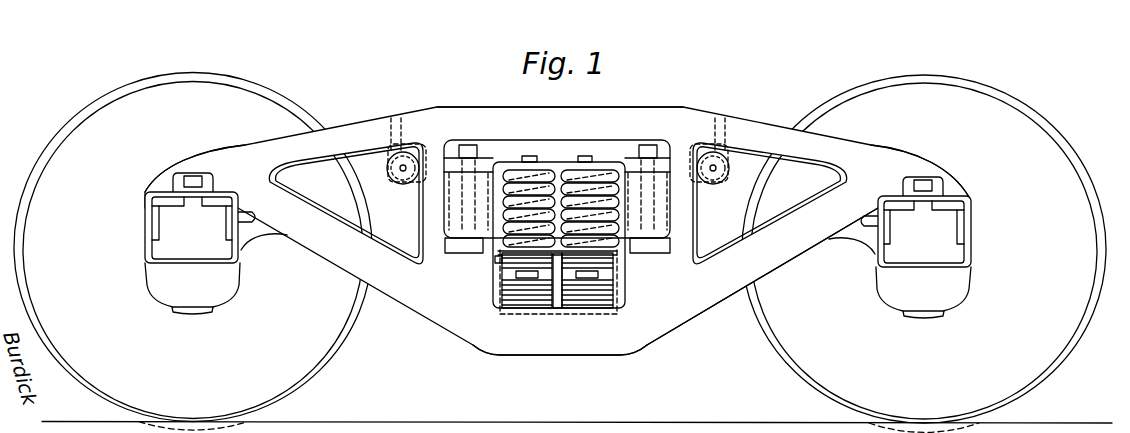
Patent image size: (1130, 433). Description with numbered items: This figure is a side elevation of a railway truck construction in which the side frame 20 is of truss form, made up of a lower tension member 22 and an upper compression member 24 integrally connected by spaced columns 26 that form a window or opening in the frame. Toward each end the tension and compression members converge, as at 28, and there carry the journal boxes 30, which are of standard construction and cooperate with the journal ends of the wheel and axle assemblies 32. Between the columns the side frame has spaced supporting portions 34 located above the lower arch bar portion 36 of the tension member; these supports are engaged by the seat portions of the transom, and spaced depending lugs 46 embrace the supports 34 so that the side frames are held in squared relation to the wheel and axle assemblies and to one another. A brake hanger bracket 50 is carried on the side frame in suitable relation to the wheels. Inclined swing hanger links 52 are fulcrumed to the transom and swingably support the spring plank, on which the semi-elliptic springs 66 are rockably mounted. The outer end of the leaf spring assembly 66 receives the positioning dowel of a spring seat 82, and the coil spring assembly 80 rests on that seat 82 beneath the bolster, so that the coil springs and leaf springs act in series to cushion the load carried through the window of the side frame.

The side frame 20 is at (692, 113).
The tension member 22 is at (712, 293).
The compression member 24 is at (632, 107).
The columns 26 is at (423, 205).
The converging end portions 28 is at (240, 145).
The journal boxes 30 is at (147, 240).
The wheel and axle assemblies 32 is at (111, 108).
The supporting portions 34 is at (640, 263).
The lower arch bar portion 36 is at (563, 350).
The depending lugs 46 is at (661, 249).
The brake hanger bracket 50 is at (388, 169).
The swing hanger links 52 is at (468, 145).
The semi-elliptic springs 66 is at (578, 296).
The coil spring assembly 80 is at (580, 175).
The spring seat 82 is at (492, 257).